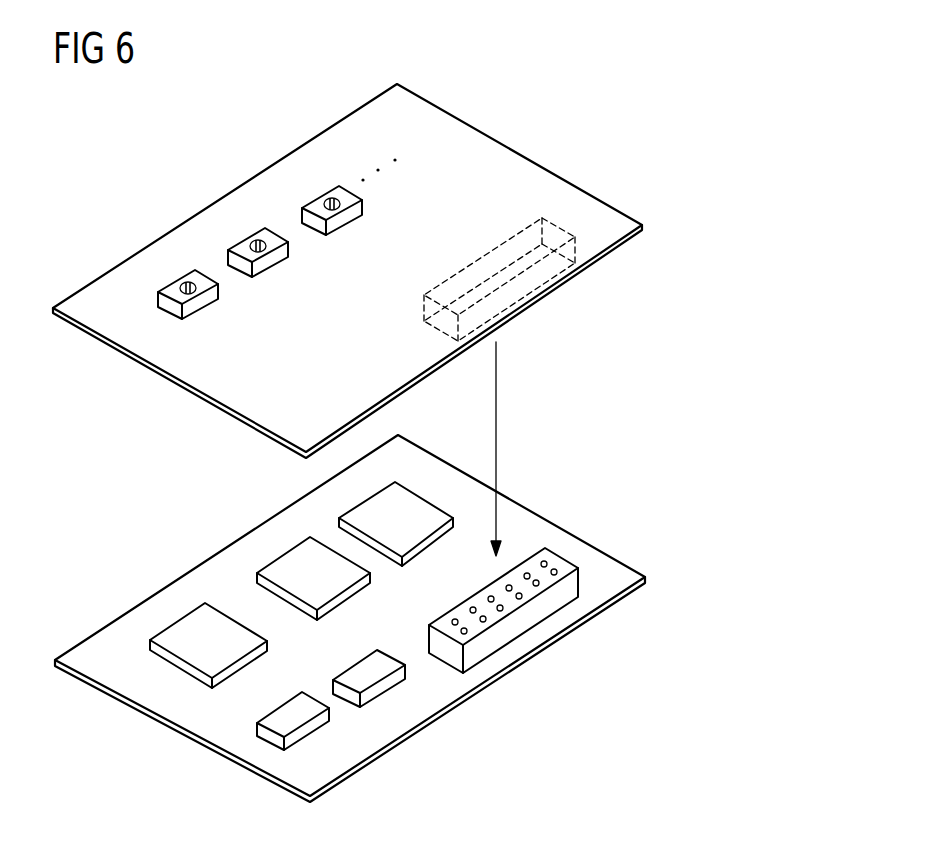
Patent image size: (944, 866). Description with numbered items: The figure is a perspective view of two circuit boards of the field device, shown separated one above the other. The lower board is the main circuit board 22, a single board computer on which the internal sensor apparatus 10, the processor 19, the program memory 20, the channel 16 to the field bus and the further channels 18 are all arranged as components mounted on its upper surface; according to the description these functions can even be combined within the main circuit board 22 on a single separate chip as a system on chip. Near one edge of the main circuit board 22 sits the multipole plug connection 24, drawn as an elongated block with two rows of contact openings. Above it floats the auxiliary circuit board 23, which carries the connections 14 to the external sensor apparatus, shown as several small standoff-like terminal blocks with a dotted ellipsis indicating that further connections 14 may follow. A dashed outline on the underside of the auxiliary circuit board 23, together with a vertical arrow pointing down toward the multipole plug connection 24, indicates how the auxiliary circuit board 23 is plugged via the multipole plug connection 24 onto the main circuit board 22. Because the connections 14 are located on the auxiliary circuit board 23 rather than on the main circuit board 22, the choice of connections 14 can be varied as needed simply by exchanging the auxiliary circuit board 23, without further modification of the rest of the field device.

The internal sensor apparatus 10 is at (417, 510).
The connections 14 is at (175, 288).
The channel 16 is at (307, 733).
The further channels 18 is at (385, 685).
The processor 19 is at (183, 635).
The program memory 20 is at (287, 567).
The main circuit board 22 is at (532, 532).
The auxiliary circuit board 23 is at (539, 187).
The multipole plug connection 24 is at (520, 618).